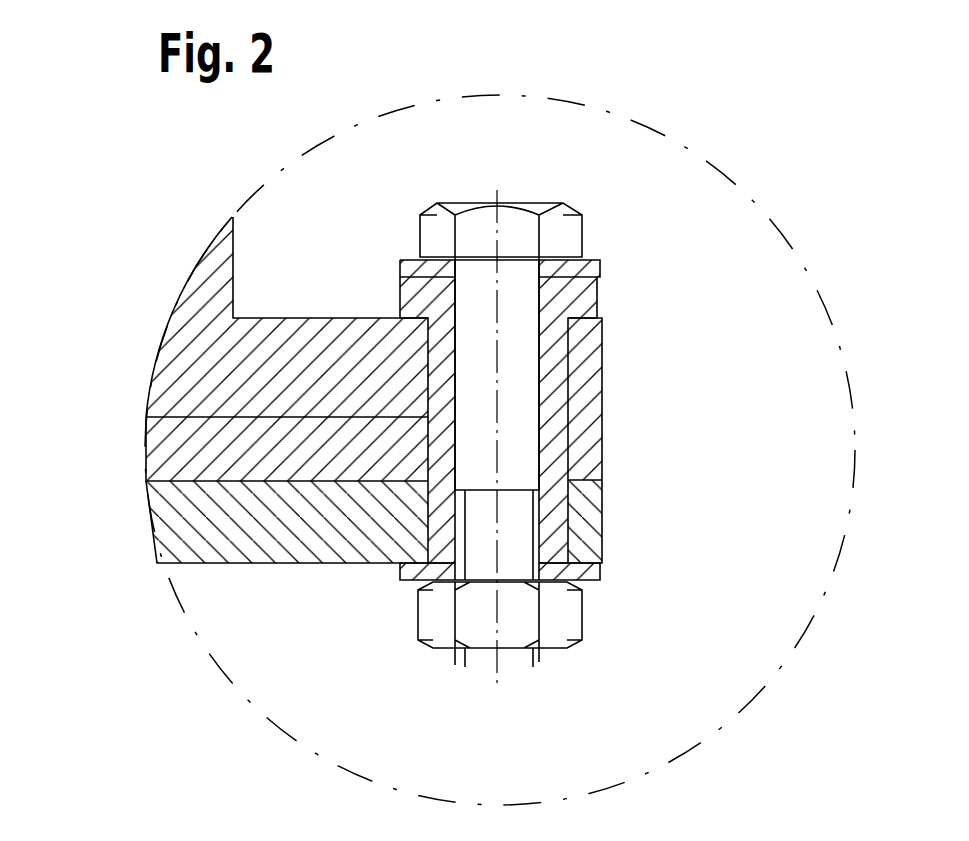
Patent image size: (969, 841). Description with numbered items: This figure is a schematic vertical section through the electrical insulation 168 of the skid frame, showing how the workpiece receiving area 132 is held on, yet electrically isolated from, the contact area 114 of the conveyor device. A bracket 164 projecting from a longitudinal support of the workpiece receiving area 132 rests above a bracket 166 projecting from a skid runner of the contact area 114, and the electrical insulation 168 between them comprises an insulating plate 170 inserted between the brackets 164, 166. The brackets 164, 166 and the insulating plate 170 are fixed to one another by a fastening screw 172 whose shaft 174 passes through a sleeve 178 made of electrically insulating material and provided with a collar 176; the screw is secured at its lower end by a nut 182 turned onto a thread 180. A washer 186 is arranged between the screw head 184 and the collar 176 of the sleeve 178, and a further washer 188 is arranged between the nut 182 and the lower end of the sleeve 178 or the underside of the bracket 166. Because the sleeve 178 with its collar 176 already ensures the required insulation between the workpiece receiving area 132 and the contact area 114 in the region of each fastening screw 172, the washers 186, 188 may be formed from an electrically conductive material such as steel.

The contact area 114 is at (280, 560).
The workpiece receiving area 132 is at (353, 353).
The bracket 164 is at (283, 353).
The bracket 166 is at (350, 560).
The electrical insulation 168 is at (548, 417).
The insulating plate 170 is at (180, 452).
The fastening screw 172 is at (557, 396).
The shaft 174 is at (517, 367).
The collar 176 is at (575, 292).
The sleeve 178 is at (550, 405).
The thread 180 is at (518, 535).
The nut 182 is at (560, 622).
The screw head 184 is at (563, 232).
The washer 186 is at (577, 272).
The washer 188 is at (585, 575).